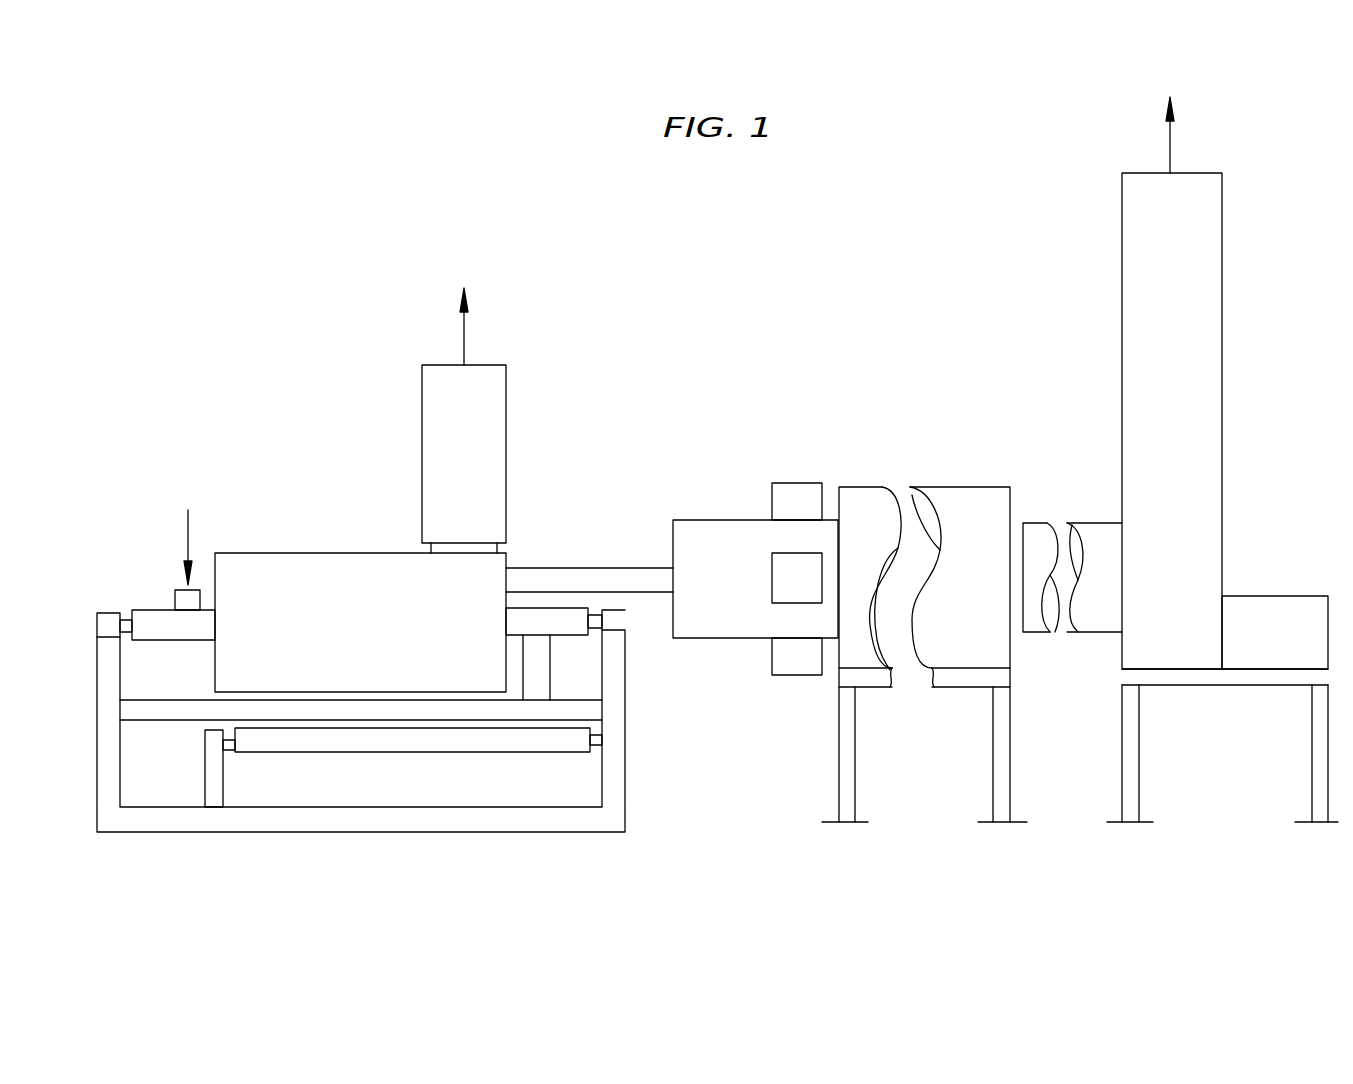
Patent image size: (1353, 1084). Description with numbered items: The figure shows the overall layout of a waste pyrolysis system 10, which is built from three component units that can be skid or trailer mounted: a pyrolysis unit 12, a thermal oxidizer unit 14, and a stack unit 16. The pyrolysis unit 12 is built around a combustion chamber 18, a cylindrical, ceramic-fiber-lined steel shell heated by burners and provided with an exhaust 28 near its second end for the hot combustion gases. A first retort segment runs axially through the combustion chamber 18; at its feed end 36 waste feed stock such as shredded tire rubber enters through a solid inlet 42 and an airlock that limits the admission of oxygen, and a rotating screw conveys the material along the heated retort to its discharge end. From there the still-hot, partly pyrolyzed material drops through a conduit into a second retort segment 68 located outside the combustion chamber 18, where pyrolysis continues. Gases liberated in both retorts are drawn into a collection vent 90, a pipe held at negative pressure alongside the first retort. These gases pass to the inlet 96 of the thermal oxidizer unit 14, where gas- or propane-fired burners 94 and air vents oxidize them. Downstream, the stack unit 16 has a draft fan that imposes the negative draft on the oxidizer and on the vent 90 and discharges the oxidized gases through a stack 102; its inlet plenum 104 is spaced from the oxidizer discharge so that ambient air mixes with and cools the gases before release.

The system 10 is at (722, 346).
The pyrolysis unit 12 is at (281, 414).
The thermal oxidizer unit 14 is at (861, 430).
The stack unit 16 is at (1285, 490).
The combustion chamber 18 is at (283, 575).
The exhaust 28 is at (482, 403).
The feed end 36 is at (155, 610).
The solid inlet 42 is at (203, 590).
The second retort segment 68 is at (400, 742).
The collection vent 90 is at (545, 568).
The burners 94 is at (795, 483).
The inlet 96 is at (650, 568).
The stack 102 is at (1222, 338).
The stack unit inlet plenum 104 is at (1033, 523).